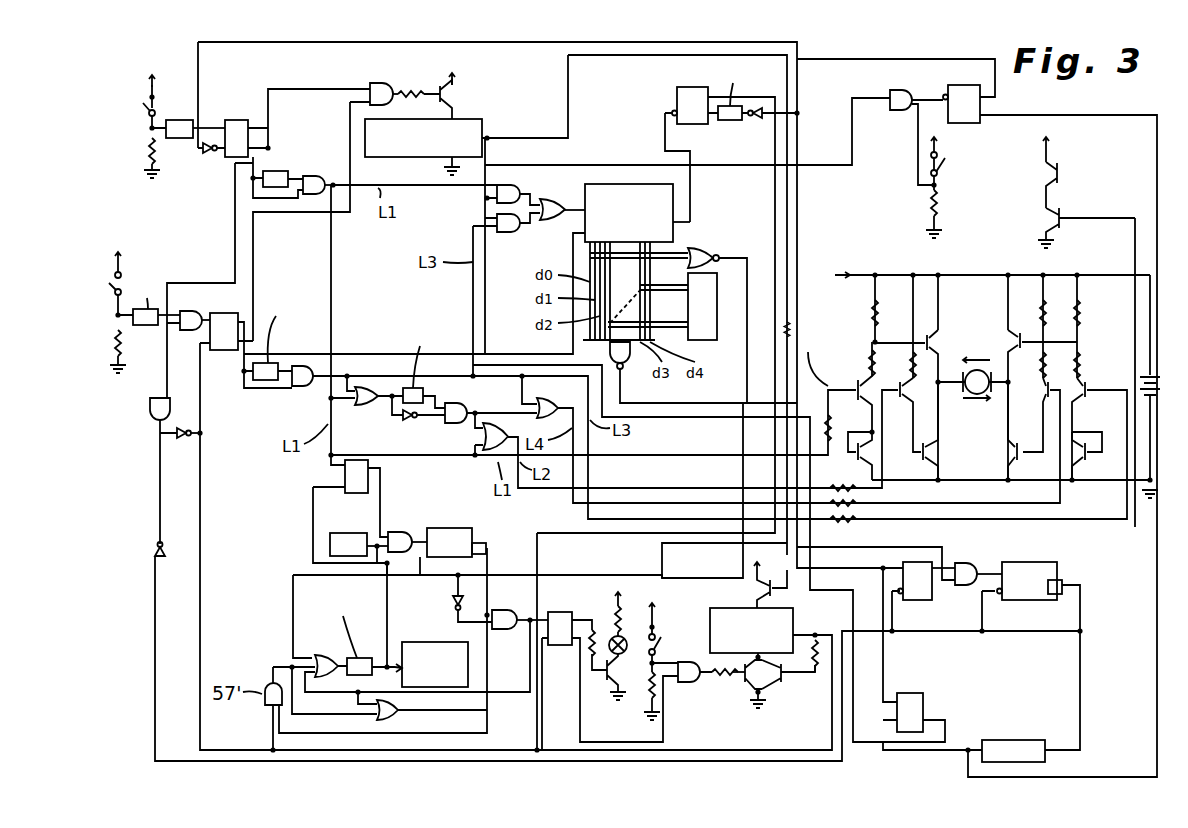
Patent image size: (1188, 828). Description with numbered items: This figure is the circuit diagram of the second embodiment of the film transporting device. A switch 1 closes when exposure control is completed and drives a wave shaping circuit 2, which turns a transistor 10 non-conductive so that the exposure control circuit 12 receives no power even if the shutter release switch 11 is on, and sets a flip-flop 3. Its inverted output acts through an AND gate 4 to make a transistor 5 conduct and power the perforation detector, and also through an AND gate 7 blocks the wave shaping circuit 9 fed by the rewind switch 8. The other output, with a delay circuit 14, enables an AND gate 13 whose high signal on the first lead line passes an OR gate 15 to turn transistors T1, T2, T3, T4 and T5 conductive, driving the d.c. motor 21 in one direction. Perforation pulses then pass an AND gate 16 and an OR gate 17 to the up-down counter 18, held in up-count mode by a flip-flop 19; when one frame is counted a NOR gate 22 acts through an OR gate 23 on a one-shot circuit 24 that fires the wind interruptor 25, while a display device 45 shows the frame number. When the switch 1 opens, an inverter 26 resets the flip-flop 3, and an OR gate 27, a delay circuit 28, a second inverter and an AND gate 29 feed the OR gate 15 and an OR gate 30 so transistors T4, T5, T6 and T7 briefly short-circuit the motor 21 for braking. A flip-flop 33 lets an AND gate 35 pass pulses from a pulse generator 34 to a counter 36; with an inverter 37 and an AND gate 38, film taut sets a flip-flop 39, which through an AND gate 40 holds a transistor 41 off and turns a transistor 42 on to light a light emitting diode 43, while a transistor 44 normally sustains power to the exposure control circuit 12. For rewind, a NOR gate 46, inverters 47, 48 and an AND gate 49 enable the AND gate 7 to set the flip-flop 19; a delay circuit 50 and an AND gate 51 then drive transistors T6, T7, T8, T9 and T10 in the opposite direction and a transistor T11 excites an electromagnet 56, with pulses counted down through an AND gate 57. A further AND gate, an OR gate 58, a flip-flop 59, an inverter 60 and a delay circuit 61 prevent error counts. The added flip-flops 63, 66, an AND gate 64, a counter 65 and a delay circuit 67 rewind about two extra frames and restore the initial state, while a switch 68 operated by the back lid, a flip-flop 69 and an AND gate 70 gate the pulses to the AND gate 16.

The switch 1 is at (143, 108).
The wave shaping circuit 2 is at (172, 178).
The flip-flop 3 is at (236, 120).
The AND gate 4 is at (381, 83).
The transistor 5 is at (458, 92).
The AND gate 7 is at (188, 330).
The rewind switch 8 is at (110, 284).
The wave shaping circuit 9 is at (145, 325).
The transistor 10 is at (757, 590).
The shutter release switch 11 is at (665, 646).
The exposure control circuit 12 is at (793, 610).
The AND gate 13 is at (314, 176).
The delay circuit 14 is at (300, 113).
The OR gate 15 is at (496, 424).
The AND gate 16 is at (513, 186).
The OR gate 17 is at (548, 199).
The up-down counter 18 is at (628, 184).
The flip-flop 19 is at (225, 350).
The d.c. motor 21 is at (968, 398).
The NOR gate 22 is at (699, 248).
The OR gate 23 is at (320, 656).
The one-shot circuit 24 is at (362, 658).
The wind interruptor 25 is at (435, 642).
The inverter 26 is at (210, 155).
The OR gate 27 is at (364, 405).
The delay circuit 28 is at (428, 394).
The AND gate 29 is at (452, 423).
The OR gate 30 is at (547, 399).
The flip-flop 33 is at (344, 478).
The pulse generator 34 is at (347, 533).
The AND gate 35 is at (400, 532).
The counter 36 is at (470, 520).
The inverter 37 is at (450, 601).
The AND gate 38 is at (505, 629).
The flip-flop 39 is at (556, 612).
The AND gate 40 is at (694, 682).
The transistor 41 is at (752, 685).
The transistor 42 is at (611, 681).
The light emitting diode 43 is at (612, 630).
The transistor 44 is at (778, 685).
The display device 45 is at (716, 342).
The NOR gate 46 is at (623, 368).
The inverter 47 is at (181, 440).
The inverter 48 is at (155, 553).
The AND gate 49 is at (150, 406).
The delay circuit 50 is at (262, 380).
The AND gate 51 is at (303, 386).
The electromagnet 56 is at (1060, 165).
The AND gate 57 is at (507, 232).
The OR gate 58 is at (392, 716).
The flip-flop 59 is at (690, 87).
The inverter 60 is at (758, 118).
The delay circuit 61 is at (730, 120).
The flip-flop 63 is at (930, 598).
The AND gate 64 is at (966, 563).
The counter 65 is at (1055, 564).
The flip-flop 66 is at (912, 693).
The delay circuit 67 is at (1012, 740).
The switch 68 is at (948, 162).
The flip-flop 69 is at (962, 123).
The AND gate 70 is at (900, 110).
The transistor T1 is at (856, 386).
The transistor T2 is at (857, 456).
The transistor T3 is at (931, 336).
The transistor T4 is at (1045, 396).
The transistor T5 is at (1013, 458).
The transistor T6 is at (902, 400).
The transistor T7 is at (928, 462).
The transistor T8 is at (1086, 384).
The transistor T9 is at (1076, 466).
The transistor T10 is at (1017, 340).
The transistor T11 is at (1060, 232).